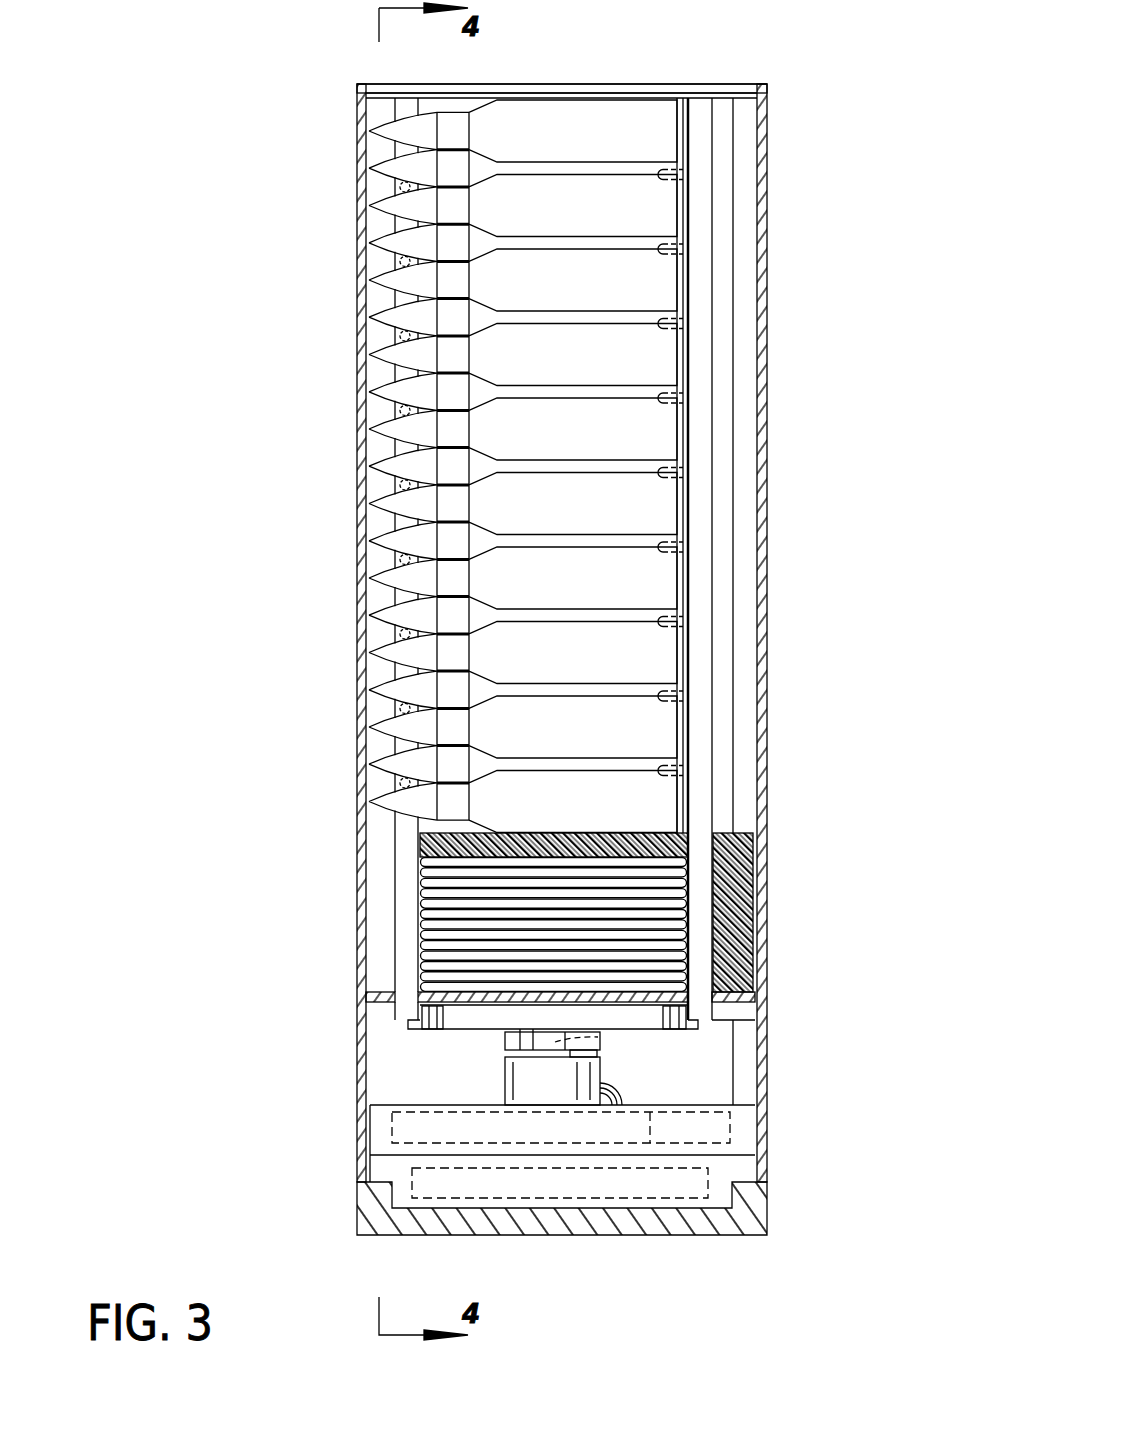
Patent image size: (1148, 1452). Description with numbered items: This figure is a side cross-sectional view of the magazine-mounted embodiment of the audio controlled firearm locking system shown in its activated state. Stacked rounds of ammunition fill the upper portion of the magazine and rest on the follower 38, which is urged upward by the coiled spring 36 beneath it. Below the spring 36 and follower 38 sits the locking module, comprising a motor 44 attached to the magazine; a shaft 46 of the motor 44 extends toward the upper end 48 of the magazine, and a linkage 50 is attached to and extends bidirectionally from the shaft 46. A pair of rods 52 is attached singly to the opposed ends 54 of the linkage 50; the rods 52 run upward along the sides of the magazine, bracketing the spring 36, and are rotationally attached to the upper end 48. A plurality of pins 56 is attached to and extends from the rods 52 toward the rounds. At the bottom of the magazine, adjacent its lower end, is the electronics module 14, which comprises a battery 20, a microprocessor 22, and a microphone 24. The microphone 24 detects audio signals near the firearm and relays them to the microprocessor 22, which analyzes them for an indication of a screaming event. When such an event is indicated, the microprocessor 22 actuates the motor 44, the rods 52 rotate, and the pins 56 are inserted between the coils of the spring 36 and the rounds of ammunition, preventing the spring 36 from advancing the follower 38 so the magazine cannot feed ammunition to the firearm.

The electronics module 14 is at (383, 1168).
The battery 20 is at (413, 1125).
The microprocessor 22 is at (675, 1187).
The microphone 24 is at (717, 1125).
The spring 36 is at (638, 893).
The follower 38 is at (640, 840).
The motor 44 is at (525, 1078).
The shaft 46 is at (600, 1038).
The upper end 48 is at (647, 84).
The linkage 50 is at (640, 1028).
The rods 52 is at (718, 137).
The opposed ends 54 is at (698, 1022).
The pins 56 is at (400, 396).